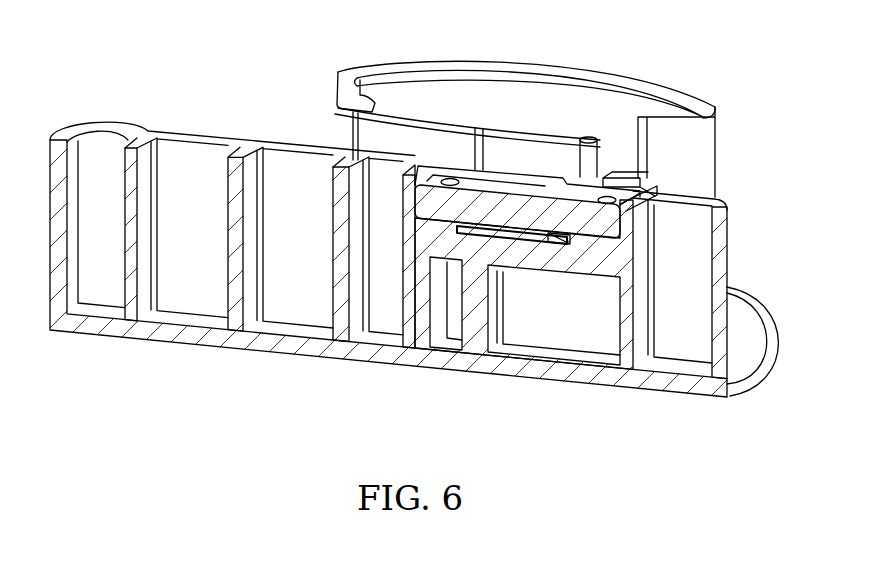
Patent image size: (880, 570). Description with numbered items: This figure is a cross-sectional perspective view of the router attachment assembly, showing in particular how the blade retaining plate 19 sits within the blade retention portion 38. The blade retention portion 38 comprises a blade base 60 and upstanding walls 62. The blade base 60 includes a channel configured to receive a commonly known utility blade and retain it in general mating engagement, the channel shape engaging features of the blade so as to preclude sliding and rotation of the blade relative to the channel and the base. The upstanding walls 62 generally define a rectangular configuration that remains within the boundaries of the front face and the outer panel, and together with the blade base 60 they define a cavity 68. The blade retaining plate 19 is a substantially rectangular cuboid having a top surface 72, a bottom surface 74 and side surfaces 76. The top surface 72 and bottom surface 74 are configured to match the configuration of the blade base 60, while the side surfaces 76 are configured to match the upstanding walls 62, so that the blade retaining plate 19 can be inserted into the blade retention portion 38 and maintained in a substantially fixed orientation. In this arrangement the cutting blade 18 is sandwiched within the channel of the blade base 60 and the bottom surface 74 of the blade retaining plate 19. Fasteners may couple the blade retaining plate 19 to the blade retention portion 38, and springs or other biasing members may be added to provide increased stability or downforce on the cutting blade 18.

The blade base 60 is at (437, 233).
The top surface 72 is at (443, 171).
The cavity 68 is at (497, 169).
The blade retaining plate 19 is at (582, 186).
The blade retention portion 38 is at (627, 172).
The side surfaces 76 is at (633, 210).
The upstanding walls 62 is at (625, 227).
The bottom surface 74 is at (495, 227).
The cutting blade 18 is at (527, 235).